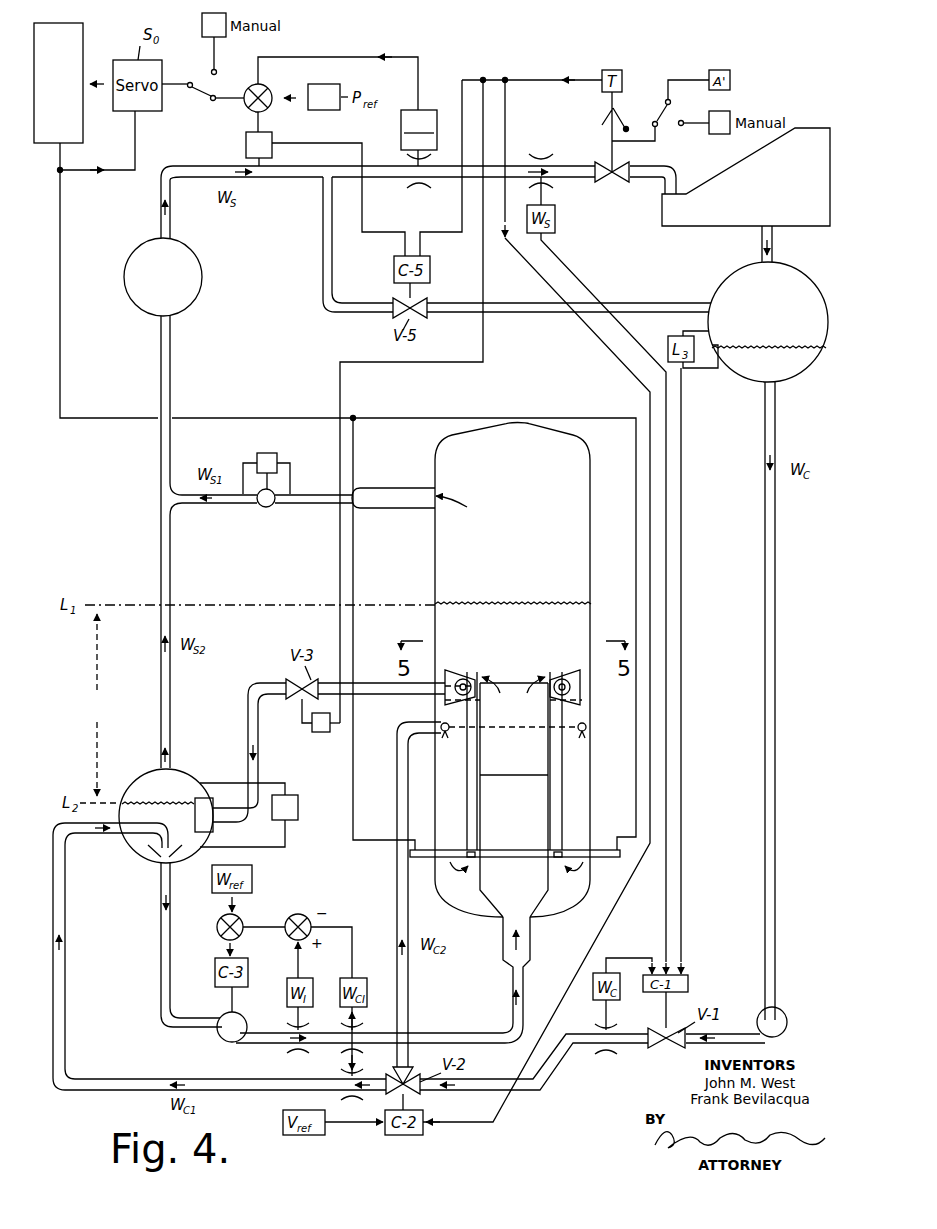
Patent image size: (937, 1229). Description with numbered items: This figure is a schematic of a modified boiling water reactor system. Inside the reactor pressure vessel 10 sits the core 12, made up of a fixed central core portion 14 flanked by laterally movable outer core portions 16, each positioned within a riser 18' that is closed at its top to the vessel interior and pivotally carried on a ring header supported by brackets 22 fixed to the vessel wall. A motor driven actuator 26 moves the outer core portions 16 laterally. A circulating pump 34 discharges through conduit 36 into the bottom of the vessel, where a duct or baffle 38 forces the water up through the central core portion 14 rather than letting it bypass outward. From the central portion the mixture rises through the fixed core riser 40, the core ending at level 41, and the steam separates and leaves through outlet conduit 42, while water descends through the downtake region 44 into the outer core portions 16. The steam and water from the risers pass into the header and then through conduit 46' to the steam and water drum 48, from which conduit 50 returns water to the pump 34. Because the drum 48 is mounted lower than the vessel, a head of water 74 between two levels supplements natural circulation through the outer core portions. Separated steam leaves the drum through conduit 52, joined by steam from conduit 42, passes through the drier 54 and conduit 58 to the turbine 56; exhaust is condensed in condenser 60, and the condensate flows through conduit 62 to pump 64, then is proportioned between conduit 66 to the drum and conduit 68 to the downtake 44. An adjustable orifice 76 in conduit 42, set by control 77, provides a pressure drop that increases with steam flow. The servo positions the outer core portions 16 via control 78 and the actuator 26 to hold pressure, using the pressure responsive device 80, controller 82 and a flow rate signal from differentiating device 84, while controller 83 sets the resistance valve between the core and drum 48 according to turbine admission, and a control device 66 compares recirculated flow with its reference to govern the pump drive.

The reactor pressure vessel 10 is at (435, 552).
The core 12 is at (456, 766).
The fixed central core portion 14 is at (528, 780).
The outer laterally movable core portions 16 is at (466, 812).
The riser 18' is at (513, 717).
The brackets 22 is at (455, 672).
The motor driven actuator 26 is at (428, 862).
The circulating pump 34 is at (219, 1037).
The conduit 36 is at (458, 1034).
The duct or baffle 38 is at (547, 880).
The fixed core riser 40 is at (478, 698).
The level 41 is at (500, 774).
The outlet conduit 42 is at (312, 492).
The downtake region 44 is at (455, 778).
The conduit 46' is at (329, 732).
The steam and water drum 48 is at (138, 782).
The conduit 50 is at (161, 966).
The conduit 52 is at (160, 456).
The drier 54 is at (203, 276).
The turbine 56 is at (678, 232).
The conduit 58 is at (290, 179).
The condenser 60 is at (728, 285).
The conduit 62 is at (765, 437).
The pump 64 is at (790, 1020).
The conduit / control device 66 is at (113, 1079).
The conduit 68 is at (410, 997).
The head of water 74 is at (93, 705).
The adjustable orifice 76 is at (272, 508).
The control 77 is at (278, 455).
The control 78 is at (83, 42).
The pressure responsive device 80 is at (246, 146).
The controller 82 is at (250, 86).
The controller 83 is at (322, 733).
The differentiating device 84 is at (425, 110).